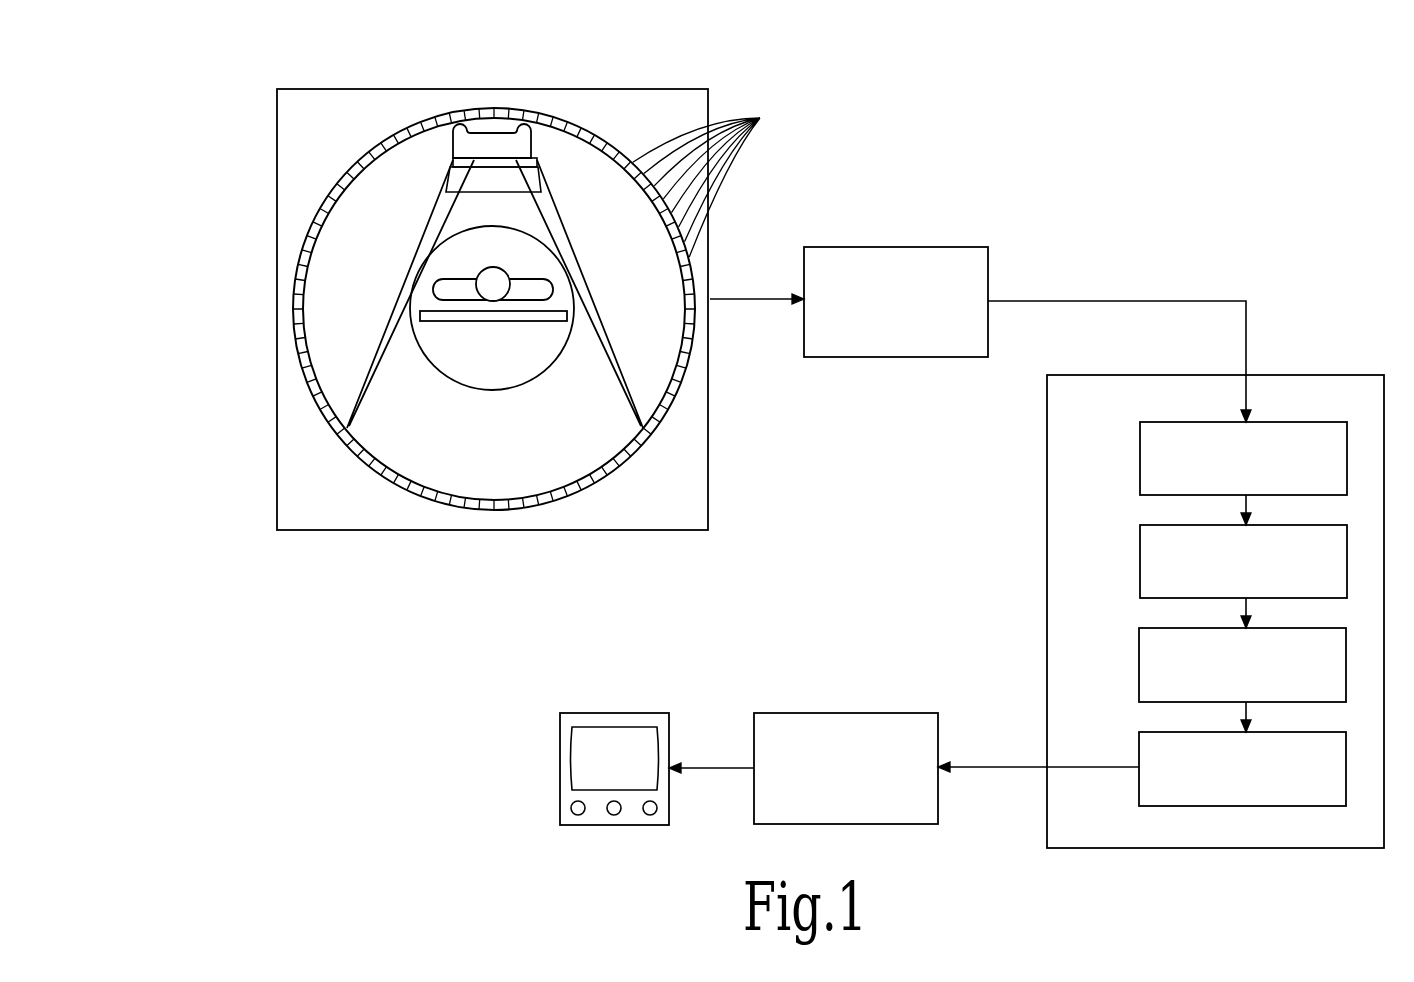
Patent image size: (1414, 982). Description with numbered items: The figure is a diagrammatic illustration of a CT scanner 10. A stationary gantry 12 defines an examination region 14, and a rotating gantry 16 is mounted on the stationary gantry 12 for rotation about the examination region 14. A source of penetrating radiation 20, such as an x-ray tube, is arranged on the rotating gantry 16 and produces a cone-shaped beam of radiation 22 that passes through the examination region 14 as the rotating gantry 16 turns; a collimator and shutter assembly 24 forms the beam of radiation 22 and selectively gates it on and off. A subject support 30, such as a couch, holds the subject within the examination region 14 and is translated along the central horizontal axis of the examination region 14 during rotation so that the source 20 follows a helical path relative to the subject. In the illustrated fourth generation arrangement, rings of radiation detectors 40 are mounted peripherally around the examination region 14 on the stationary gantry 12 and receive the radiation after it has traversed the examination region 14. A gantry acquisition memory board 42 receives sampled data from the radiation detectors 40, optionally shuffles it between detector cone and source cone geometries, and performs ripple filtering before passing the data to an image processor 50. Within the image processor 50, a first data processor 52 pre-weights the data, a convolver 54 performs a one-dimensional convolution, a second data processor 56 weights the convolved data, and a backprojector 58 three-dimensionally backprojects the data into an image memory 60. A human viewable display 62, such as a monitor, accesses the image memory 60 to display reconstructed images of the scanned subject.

The CT scanner 10 is at (374, 606).
The stationary gantry 12 is at (632, 530).
The examination region 14 is at (505, 368).
The rotating gantry 16 is at (417, 243).
The source of penetrating radiation 20 is at (497, 132).
The cone-shaped beam of radiation 22 is at (538, 208).
The collimator and shutter assembly 24 is at (447, 177).
The subject support 30 is at (442, 330).
The radiation detectors 40 is at (760, 118).
The gantry acquisition memory board 42 is at (947, 247).
The image processor 50 is at (1047, 580).
The first data processor 52 is at (1140, 458).
The convolver 54 is at (1140, 562).
The second data processor 56 is at (1139, 668).
The backprojector 58 is at (1139, 752).
The image memory 60 is at (845, 713).
The human viewable display 62 is at (560, 768).